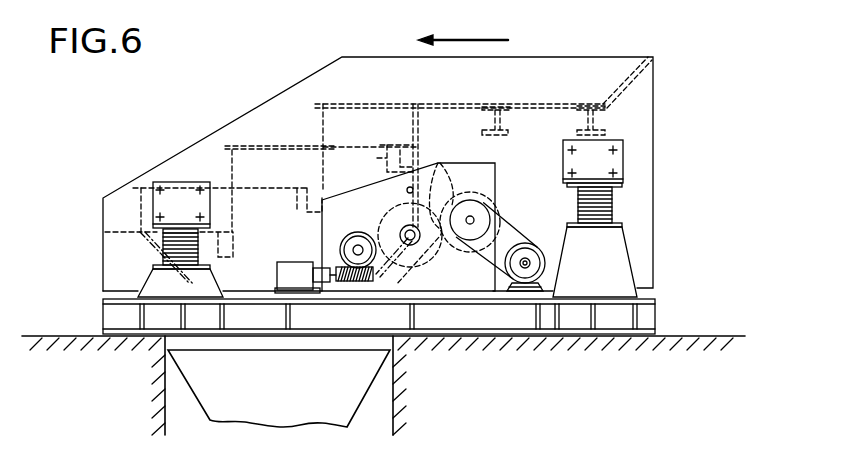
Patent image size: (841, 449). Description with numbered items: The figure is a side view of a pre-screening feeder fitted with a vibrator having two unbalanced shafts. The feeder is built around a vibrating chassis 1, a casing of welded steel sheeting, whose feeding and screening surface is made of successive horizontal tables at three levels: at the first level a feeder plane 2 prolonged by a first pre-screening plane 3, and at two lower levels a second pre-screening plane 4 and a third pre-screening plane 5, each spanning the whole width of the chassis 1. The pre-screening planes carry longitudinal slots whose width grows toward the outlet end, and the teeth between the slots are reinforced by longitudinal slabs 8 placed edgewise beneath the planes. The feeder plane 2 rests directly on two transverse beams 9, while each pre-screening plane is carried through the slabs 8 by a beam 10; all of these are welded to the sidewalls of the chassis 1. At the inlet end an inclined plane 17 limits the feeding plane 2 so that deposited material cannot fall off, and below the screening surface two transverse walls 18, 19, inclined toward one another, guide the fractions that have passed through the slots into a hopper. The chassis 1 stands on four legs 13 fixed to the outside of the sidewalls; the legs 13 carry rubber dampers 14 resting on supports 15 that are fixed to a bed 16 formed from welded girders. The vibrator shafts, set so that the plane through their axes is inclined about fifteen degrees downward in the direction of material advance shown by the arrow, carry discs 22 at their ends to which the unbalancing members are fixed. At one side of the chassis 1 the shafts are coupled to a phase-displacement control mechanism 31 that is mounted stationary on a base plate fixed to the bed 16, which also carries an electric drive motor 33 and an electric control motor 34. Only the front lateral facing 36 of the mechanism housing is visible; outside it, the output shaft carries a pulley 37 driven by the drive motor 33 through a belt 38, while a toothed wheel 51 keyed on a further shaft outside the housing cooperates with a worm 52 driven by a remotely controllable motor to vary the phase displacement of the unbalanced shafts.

The vibrating chassis 1 is at (664, 115).
The feeder plane 2 is at (550, 96).
The first pre-screening plane 3 is at (375, 96).
The second pre-screening plane 4 is at (244, 135).
The third pre-screening plane 5 is at (208, 175).
The longitudinal slabs 8 is at (322, 110).
The beams 9 is at (577, 133).
The beam 10 is at (274, 211).
The legs 13 is at (157, 203).
The dampers 14 is at (163, 250).
The supports 15 is at (153, 283).
The bed 16 is at (666, 313).
The inclined plane 17 is at (653, 73).
The transverse wall 18 is at (167, 257).
The transverse wall 19 is at (392, 264).
The discs 22 is at (424, 211).
The phase-displacement control mechanism 31 is at (344, 181).
The electric drive motor 33 is at (548, 237).
The electric control motor 34 is at (280, 263).
The front lateral facing 36 is at (467, 162).
The pulley 37 is at (478, 208).
The belt 38 is at (485, 235).
The toothed wheel 51 is at (340, 250).
The worm 52 is at (350, 319).